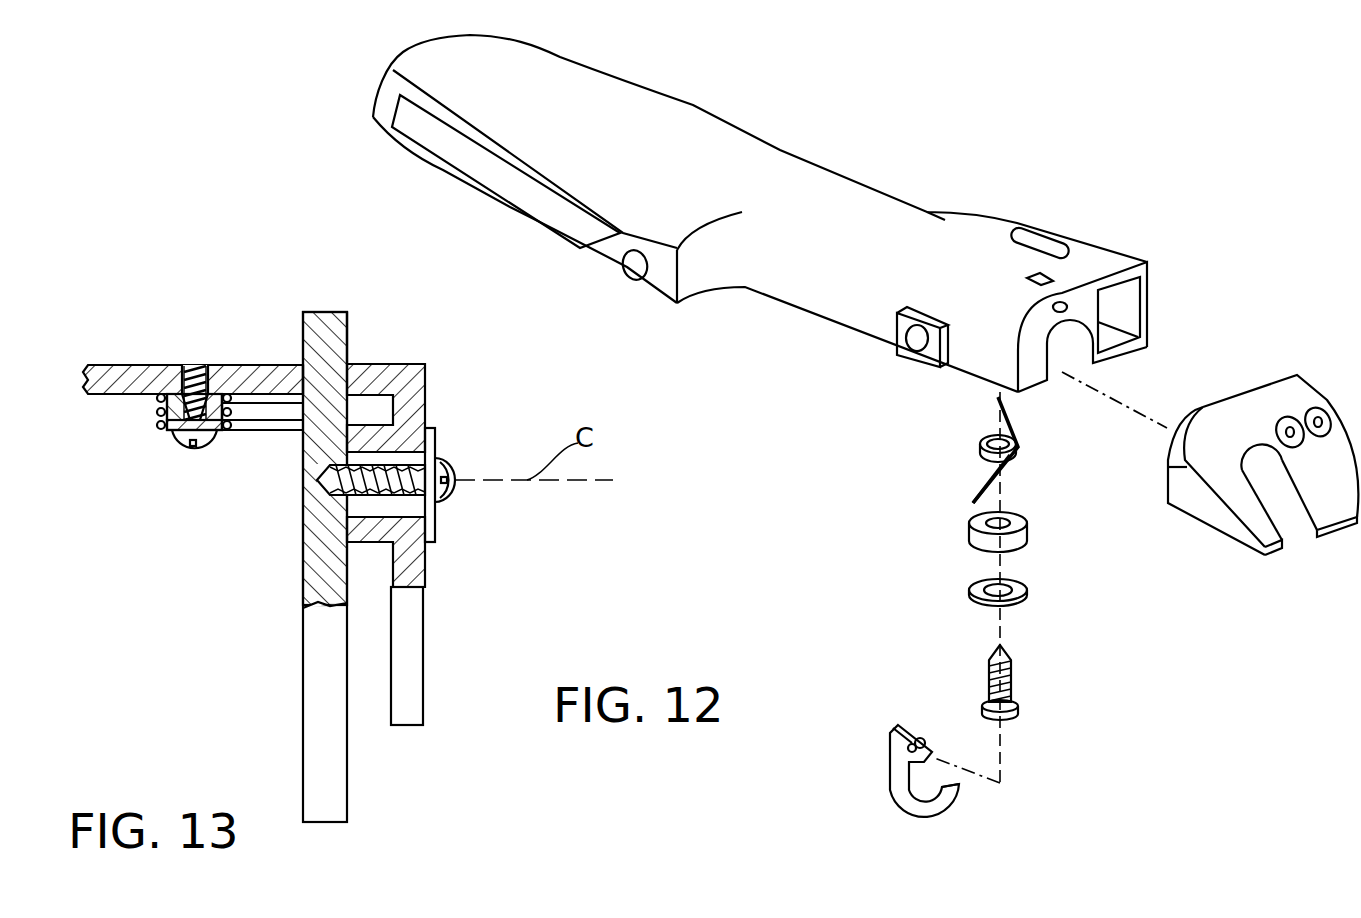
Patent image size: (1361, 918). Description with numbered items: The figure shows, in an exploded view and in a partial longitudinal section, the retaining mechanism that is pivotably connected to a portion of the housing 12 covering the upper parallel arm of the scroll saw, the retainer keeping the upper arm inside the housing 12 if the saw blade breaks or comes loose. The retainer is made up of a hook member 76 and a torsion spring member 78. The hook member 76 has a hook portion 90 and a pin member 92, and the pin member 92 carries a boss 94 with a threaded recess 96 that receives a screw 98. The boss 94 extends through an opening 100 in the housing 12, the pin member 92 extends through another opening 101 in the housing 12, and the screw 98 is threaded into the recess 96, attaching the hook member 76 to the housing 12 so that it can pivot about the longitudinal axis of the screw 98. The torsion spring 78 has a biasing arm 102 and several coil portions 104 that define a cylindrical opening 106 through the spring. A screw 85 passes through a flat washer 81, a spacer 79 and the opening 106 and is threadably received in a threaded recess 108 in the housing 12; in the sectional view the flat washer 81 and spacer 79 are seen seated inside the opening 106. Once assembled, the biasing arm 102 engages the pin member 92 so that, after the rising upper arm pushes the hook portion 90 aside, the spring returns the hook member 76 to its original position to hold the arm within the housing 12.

In FIG. 12, the housing 12 is at (823, 177).
In FIG. 13, the housing 12 is at (140, 365).
In FIG. 12, the hook member 76 is at (893, 770).
In FIG. 13, the hook member 76 is at (302, 763).
In FIG. 12, the torsion spring member 78 is at (982, 455).
In FIG. 13, the torsion spring member 78 is at (232, 430).
In FIG. 12, the spacer 79 is at (970, 538).
In FIG. 13, the spacer 79 is at (164, 414).
In FIG. 12, the flat washer 81 is at (970, 592).
In FIG. 13, the flat washer 81 is at (180, 430).
In FIG. 12, the screw 85 is at (985, 675).
In FIG. 13, the screw 85 is at (190, 447).
In FIG. 12, the hook portion 90 is at (905, 818).
In FIG. 12, the pin member 92 is at (895, 745).
In FIG. 13, the pin member 92 is at (350, 347).
In FIG. 12, the boss 94 is at (920, 740).
In FIG. 13, the boss 94 is at (408, 453).
In FIG. 13, the threaded recess 96 is at (428, 480).
In FIG. 13, the screw 98 is at (452, 497).
In FIG. 12, the opening 100 is at (1067, 307).
In FIG. 13, the opening 100 is at (434, 517).
In FIG. 12, the opening 101 is at (1048, 277).
In FIG. 13, the opening 101 is at (300, 365).
In FIG. 12, the biasing arm 102 is at (975, 495).
In FIG. 13, the biasing arm 102 is at (273, 430).
In FIG. 13, the coil portions 104 is at (157, 400).
In FIG. 12, the cylindrical opening 106 is at (993, 435).
In FIG. 13, the threaded recess 108 is at (216, 365).